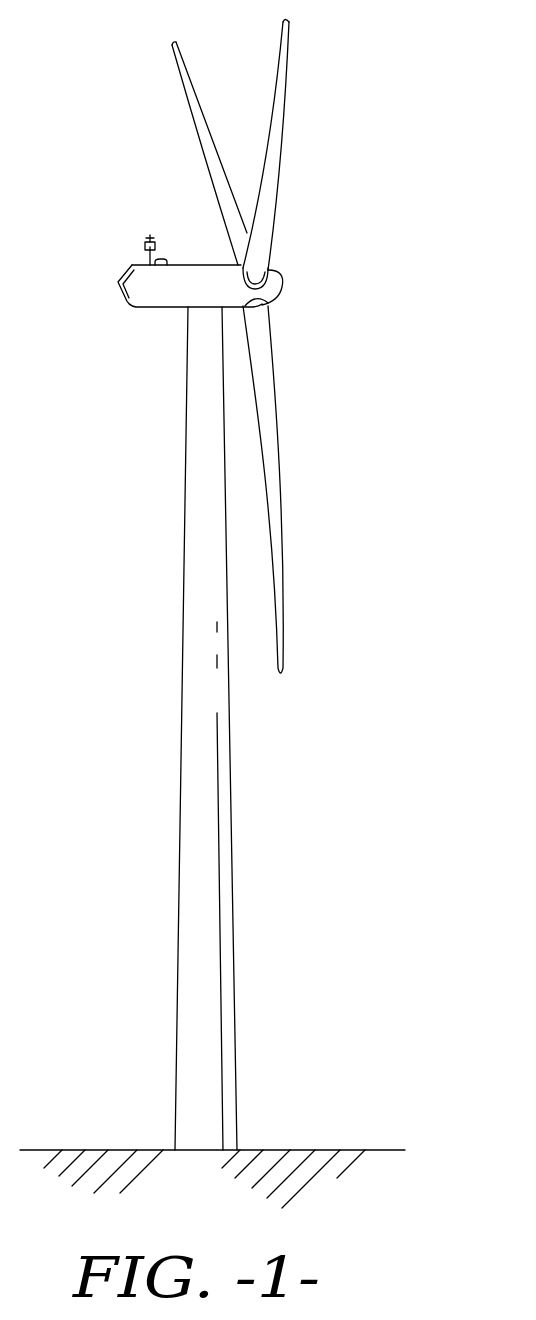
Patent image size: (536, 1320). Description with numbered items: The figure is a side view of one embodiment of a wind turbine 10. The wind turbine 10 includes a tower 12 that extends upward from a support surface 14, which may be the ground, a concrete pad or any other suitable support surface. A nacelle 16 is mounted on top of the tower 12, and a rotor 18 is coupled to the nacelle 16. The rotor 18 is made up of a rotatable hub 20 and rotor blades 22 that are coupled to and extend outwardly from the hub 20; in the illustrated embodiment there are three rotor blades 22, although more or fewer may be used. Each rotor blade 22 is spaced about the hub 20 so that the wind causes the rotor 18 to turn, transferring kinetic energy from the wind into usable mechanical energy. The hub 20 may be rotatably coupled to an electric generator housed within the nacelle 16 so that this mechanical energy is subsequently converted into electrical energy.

The wind turbine 10 is at (414, 127).
The tower 12 is at (191, 846).
The support surface 14 is at (103, 1150).
The nacelle 16 is at (163, 312).
The rotor 18 is at (262, 347).
The rotatable hub 20 is at (284, 285).
The rotor blade 22 is at (209, 164).